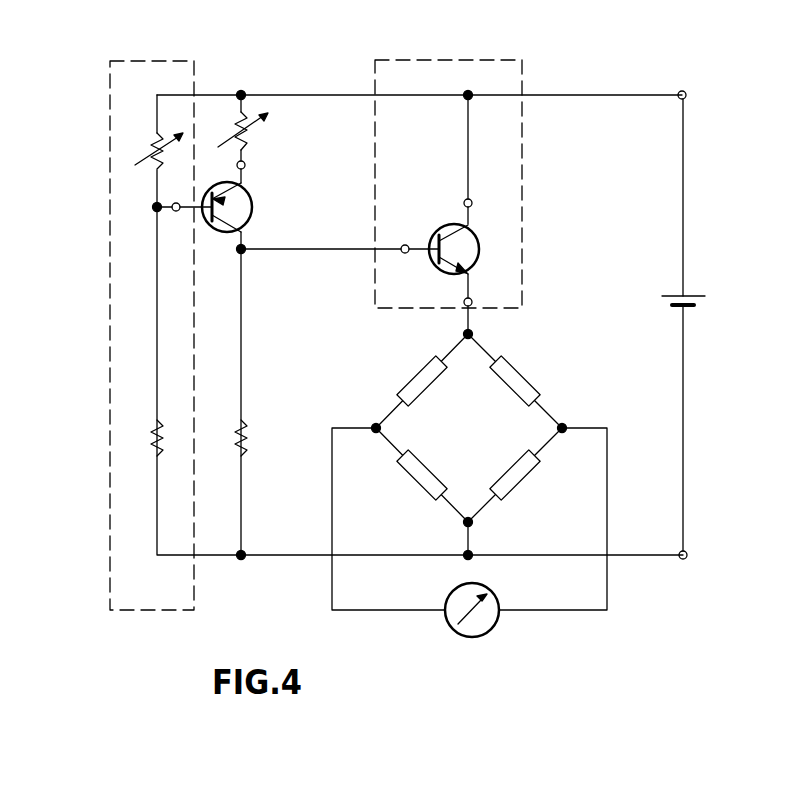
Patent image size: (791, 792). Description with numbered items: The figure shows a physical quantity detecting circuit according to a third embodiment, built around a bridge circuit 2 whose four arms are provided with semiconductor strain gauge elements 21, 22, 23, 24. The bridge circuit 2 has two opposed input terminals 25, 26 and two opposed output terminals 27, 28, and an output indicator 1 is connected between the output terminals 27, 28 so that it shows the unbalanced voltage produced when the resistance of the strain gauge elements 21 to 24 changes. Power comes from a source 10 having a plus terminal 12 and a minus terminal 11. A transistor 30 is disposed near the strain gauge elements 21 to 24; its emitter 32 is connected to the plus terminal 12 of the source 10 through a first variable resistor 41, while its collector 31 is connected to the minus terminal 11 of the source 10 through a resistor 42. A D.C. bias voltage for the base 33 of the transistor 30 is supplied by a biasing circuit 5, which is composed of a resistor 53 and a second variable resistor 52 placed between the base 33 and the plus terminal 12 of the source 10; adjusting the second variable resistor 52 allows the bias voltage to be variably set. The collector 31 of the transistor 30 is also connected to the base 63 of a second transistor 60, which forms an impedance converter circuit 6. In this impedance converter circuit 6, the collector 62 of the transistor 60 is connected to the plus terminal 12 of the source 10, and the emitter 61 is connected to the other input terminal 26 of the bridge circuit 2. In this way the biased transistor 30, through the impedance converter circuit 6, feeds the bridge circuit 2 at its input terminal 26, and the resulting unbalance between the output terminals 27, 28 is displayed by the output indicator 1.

The output indicator 1 is at (492, 596).
The bridge circuit 2 is at (464, 428).
The biasing circuit 5 is at (106, 95).
The impedance converter circuit 6 is at (522, 80).
The source 10 is at (690, 295).
The minus terminal 11 is at (686, 552).
The plus terminal 12 is at (685, 92).
The semiconductor strain gauge element 21 is at (412, 378).
The semiconductor strain gauge element 22 is at (412, 486).
The semiconductor strain gauge element 23 is at (523, 486).
The semiconductor strain gauge element 24 is at (528, 378).
The input terminal 25 is at (471, 523).
The input terminal 26 is at (462, 333).
The output terminal 27 is at (373, 425).
The output terminal 28 is at (563, 425).
The transistor 30 is at (252, 211).
The collector 31 is at (239, 251).
The emitter 32 is at (246, 168).
The base 33 is at (176, 212).
The first variable resistor 41 is at (246, 144).
The resistor 42 is at (238, 422).
The second variable resistor 52 is at (155, 138).
The resistor 53 is at (152, 423).
The transistor 60 is at (480, 249).
The emitter 61 is at (472, 302).
The collector 62 is at (473, 202).
The base 63 is at (405, 244).